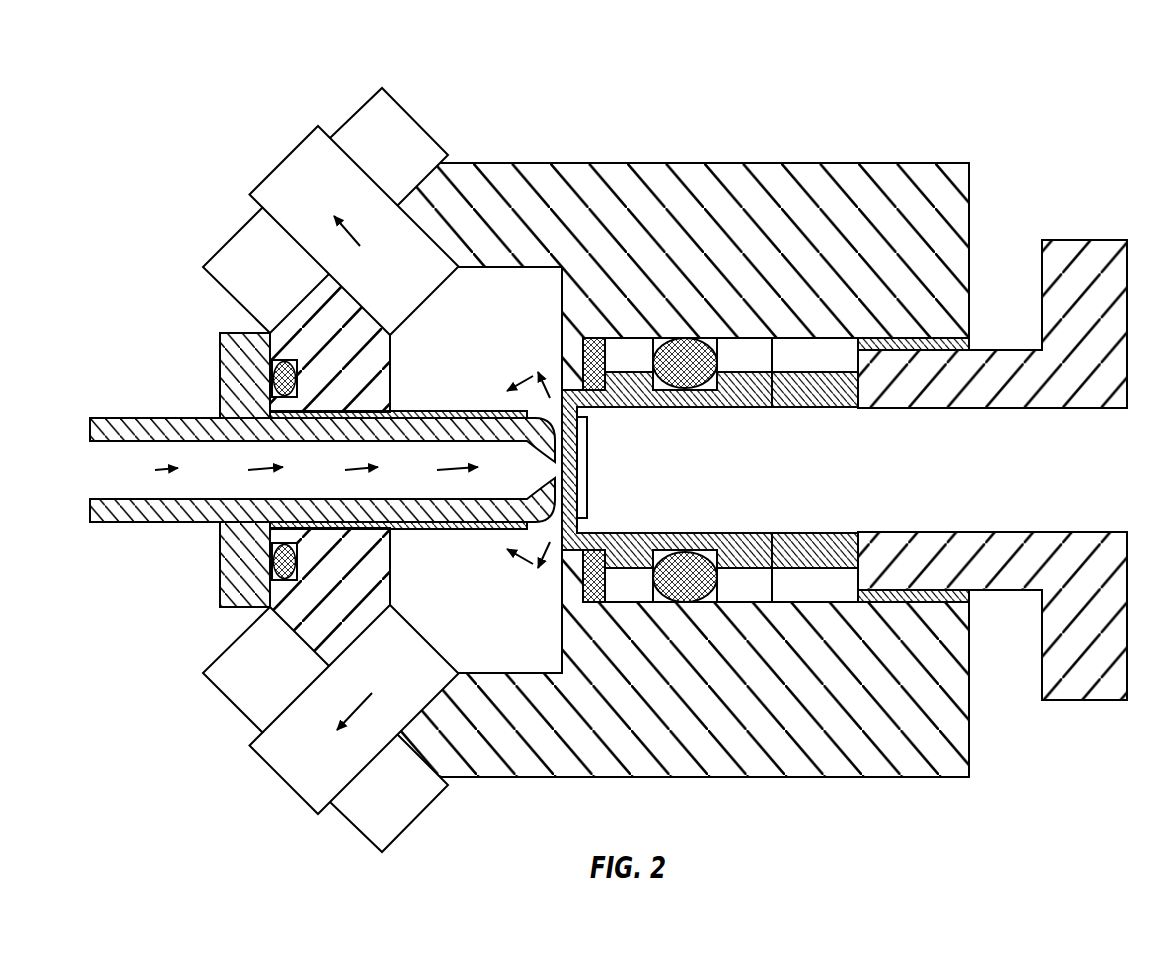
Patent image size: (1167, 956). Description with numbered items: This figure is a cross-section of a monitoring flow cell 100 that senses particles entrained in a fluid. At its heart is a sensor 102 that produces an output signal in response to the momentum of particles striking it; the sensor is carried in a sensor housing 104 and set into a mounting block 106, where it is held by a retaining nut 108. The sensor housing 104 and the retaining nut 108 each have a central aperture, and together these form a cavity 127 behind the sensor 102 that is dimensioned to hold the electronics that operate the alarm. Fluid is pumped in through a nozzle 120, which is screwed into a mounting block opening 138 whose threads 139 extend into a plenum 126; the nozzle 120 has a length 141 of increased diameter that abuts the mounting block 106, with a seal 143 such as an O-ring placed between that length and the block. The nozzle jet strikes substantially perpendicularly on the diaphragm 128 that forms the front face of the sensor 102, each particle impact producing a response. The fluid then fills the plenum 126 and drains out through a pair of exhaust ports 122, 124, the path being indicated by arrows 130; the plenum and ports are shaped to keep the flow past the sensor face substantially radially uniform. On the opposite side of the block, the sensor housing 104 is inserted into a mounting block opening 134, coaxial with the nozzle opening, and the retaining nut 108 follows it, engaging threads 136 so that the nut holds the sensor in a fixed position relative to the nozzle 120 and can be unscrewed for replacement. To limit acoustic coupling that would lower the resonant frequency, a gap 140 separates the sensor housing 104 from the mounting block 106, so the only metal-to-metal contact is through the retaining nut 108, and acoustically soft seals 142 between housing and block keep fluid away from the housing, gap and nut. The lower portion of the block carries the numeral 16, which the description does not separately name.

The monitoring flow cell 100 is at (766, 50).
The housing lower body 16 is at (835, 777).
The sensor 102 is at (585, 460).
The sensor housing 104 is at (815, 405).
The mounting block 106 is at (833, 185).
The retaining nut 108 is at (1083, 262).
The nozzle 120 is at (195, 523).
The exhaust port 122 is at (318, 126).
The exhaust port 124 is at (320, 813).
The plenum 126 is at (522, 326).
The cavity 127 is at (808, 504).
The diaphragm 128 is at (586, 478).
The arrows 130 is at (360, 248).
The mounting block opening 134 is at (772, 372).
The threads 136 is at (920, 352).
The mounting block opening 138 is at (360, 494).
The threads 139 is at (482, 411).
The gap 140 is at (832, 369).
The length of increased diameter 141 is at (226, 380).
The seals 142 is at (697, 503).
The seal 143 is at (284, 360).